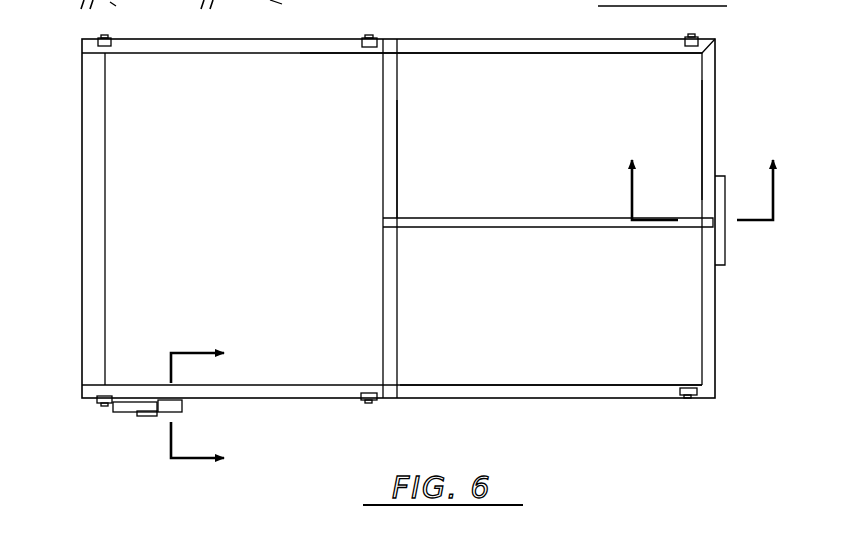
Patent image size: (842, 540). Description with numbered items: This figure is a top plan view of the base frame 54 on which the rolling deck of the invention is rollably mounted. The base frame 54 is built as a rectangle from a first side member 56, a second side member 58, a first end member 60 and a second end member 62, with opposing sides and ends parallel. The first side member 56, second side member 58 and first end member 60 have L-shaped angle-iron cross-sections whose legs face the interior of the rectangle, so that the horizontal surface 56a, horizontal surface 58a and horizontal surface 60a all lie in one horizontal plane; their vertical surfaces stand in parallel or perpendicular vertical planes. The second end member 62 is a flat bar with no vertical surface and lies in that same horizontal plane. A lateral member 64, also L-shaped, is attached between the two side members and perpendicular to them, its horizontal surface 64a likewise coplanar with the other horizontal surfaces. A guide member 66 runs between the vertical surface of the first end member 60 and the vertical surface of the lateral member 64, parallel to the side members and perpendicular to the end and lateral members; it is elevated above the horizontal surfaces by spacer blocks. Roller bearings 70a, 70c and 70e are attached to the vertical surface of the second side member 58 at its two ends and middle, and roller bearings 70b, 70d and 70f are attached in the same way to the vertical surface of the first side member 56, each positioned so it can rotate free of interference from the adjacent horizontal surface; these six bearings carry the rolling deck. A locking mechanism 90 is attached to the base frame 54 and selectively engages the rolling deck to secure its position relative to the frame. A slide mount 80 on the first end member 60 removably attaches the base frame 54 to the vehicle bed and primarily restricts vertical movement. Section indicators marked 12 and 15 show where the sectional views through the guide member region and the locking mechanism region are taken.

The base frame 54 is at (78, 113).
The first side member 56 is at (433, 402).
The horizontal surface 56a is at (466, 385).
The second side member 58 is at (514, 38).
The horizontal surface 58a is at (470, 56).
The first end member 60 is at (717, 111).
The horizontal surface 60a is at (702, 112).
The second end member 62 is at (82, 308).
The lateral member 64 is at (380, 166).
The horizontal surface 64a is at (398, 162).
The guide member 66 is at (463, 218).
The roller bearing 70a is at (112, 46).
The roller bearing 70b is at (107, 395).
The roller bearing 70c is at (379, 39).
The roller bearing 70d is at (370, 392).
The roller bearing 70e is at (699, 36).
The roller bearing 70f is at (688, 388).
The slide mount 80 is at (731, 252).
The locking mechanism 90 is at (128, 421).
The section line 12- 12 is at (704, 184).
The section line 15- 15 is at (215, 410).